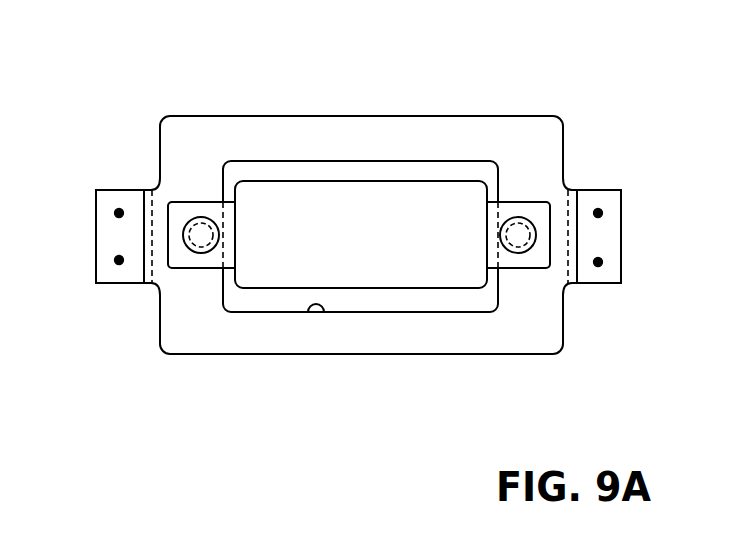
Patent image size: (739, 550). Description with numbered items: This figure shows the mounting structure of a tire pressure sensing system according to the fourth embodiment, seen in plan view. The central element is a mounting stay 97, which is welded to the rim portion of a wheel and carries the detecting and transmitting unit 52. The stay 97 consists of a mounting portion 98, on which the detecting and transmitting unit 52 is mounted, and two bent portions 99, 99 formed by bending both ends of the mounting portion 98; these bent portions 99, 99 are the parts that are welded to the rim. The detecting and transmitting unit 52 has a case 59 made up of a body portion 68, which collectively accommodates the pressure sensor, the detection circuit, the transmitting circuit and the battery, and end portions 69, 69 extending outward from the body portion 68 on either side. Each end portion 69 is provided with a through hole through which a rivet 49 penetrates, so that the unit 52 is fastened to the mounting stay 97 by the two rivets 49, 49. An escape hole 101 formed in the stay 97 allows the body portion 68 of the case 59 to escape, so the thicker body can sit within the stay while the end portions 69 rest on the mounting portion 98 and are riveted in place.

The rivet 49 is at (198, 248).
The detecting and transmitting unit 52 is at (337, 168).
The case 59 is at (350, 170).
The body portion 68 is at (405, 198).
The end portion 69 is at (193, 207).
The mounting stay 97 is at (247, 108).
The mounting portion 98 is at (525, 135).
The bent portion 99 is at (120, 197).
The escape hole 101 is at (305, 313).